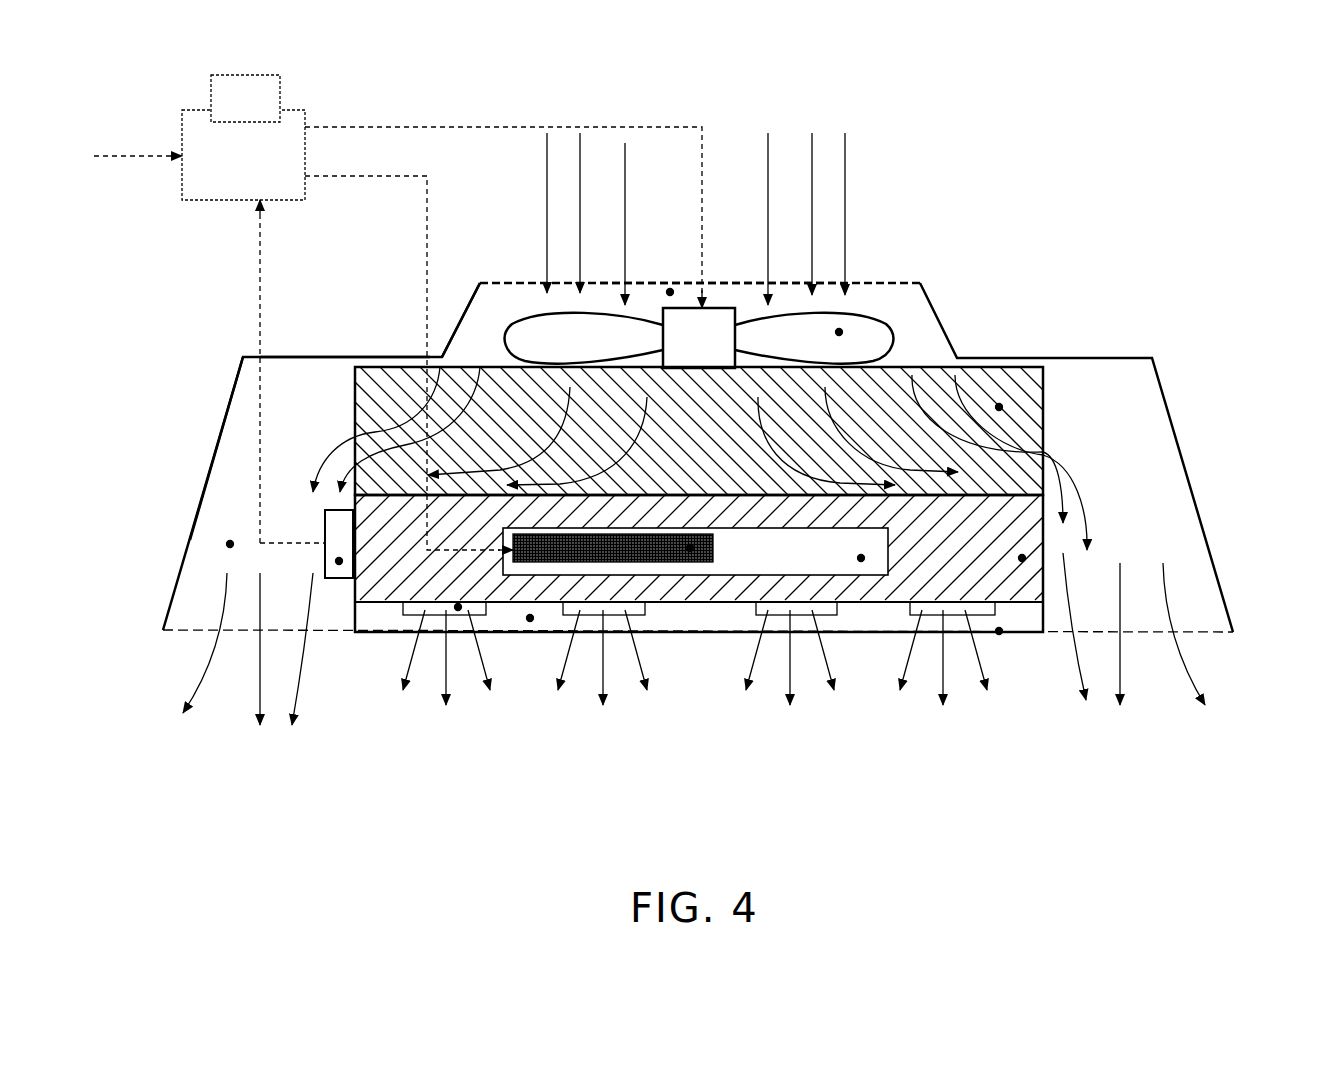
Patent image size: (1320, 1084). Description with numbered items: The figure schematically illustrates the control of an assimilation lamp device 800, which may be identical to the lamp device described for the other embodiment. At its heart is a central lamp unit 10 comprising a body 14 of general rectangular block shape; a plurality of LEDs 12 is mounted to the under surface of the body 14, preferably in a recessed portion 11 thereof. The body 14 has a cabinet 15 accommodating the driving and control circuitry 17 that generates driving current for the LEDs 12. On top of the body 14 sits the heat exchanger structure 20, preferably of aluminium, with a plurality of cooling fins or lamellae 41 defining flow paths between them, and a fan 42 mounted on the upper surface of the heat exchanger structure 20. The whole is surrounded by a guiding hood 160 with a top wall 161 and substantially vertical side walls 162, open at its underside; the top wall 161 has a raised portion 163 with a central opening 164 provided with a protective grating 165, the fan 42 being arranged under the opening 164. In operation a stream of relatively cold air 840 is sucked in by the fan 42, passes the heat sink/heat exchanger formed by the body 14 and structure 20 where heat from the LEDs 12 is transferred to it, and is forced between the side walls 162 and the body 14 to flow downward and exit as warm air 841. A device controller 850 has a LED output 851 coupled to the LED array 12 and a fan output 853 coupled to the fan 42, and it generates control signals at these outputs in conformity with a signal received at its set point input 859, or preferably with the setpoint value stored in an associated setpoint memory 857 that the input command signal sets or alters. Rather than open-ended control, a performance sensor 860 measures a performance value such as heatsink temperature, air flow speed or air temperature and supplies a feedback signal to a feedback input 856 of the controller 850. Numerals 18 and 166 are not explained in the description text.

The central lamp unit 10 is at (222, 802).
The recessed portion 11 is at (530, 618).
The LEDs 12 is at (458, 607).
The body 14 is at (1022, 558).
The cabinet 15 is at (861, 558).
The driving and control circuitry 17 is at (690, 548).
The bottom surface 18 is at (999, 631).
The heat exchanger structure 20 is at (1047, 421).
The cooling fins or lamellae 41 is at (999, 407).
The fan 42 is at (839, 332).
The guiding hood 160 is at (235, 340).
The top wall 161 is at (322, 356).
The side walls 162 is at (208, 487).
The raised portion 163 is at (467, 300).
The central opening 164 is at (670, 292).
The protective grating 165 is at (715, 283).
The outlet 166 is at (230, 544).
The assimilation lamp device 800 is at (1250, 230).
The stream of relatively cold air 840 is at (717, 219).
The warm air 841 is at (715, 646).
The device controller 850 is at (243, 155).
The LED output 851 is at (409, 351).
The fan output 853 is at (503, 205).
The feedback input 856 is at (292, 371).
The setpoint memory 857 is at (245, 98).
The set point input 859 is at (138, 144).
The performance sensor 860 is at (339, 561).